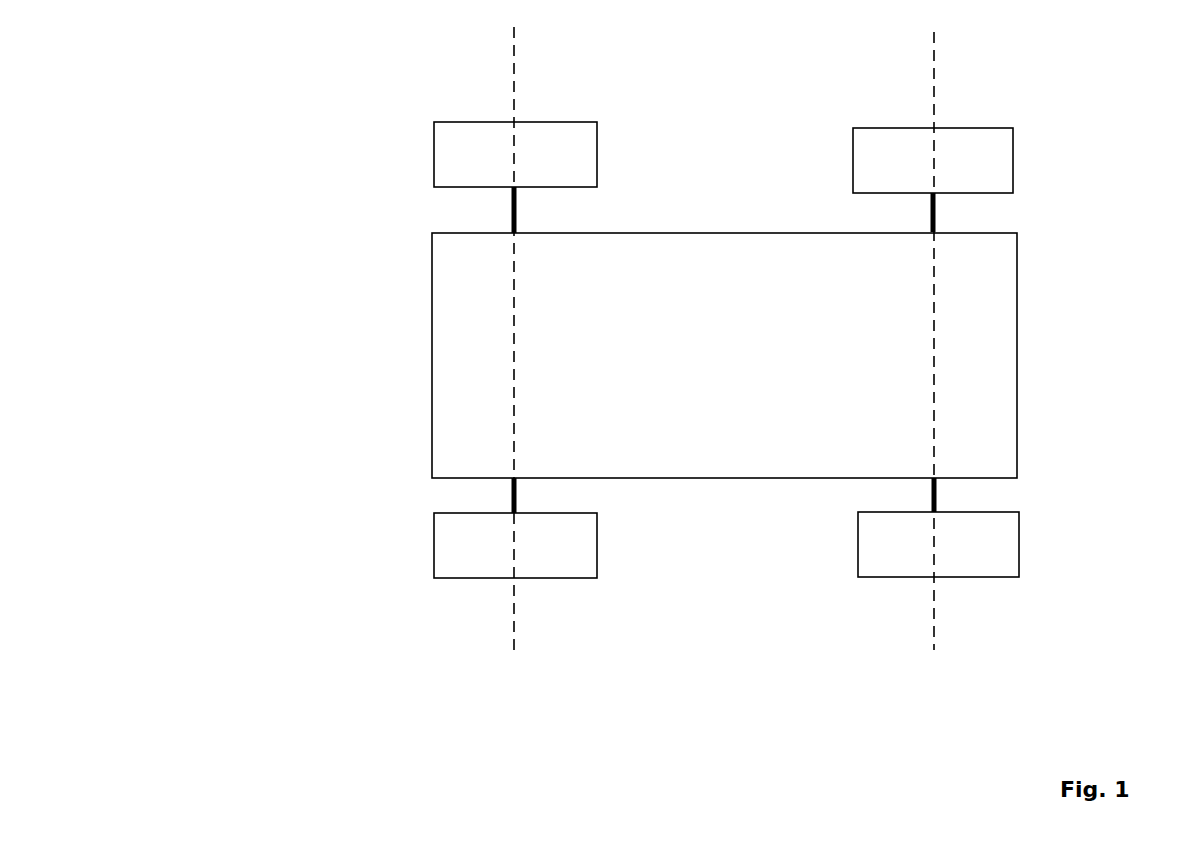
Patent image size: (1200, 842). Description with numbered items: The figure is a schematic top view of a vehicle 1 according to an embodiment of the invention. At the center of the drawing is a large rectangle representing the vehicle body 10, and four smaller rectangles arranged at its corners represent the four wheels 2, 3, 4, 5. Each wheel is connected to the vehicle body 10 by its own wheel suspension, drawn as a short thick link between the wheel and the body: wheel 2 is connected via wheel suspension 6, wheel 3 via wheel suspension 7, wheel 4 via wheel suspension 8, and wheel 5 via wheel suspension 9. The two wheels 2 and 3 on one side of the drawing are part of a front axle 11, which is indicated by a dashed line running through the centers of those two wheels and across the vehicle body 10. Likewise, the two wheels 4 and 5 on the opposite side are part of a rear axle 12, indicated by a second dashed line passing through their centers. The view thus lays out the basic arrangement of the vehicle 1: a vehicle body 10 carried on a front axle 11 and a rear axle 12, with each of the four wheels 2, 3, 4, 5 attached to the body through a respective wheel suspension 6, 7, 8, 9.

The vehicle 1 is at (255, 176).
The wheel 2 is at (467, 567).
The wheel 3 is at (465, 140).
The wheel 4 is at (993, 562).
The wheel 5 is at (1002, 150).
The wheel suspension 6 is at (518, 495).
The wheel suspension 7 is at (518, 212).
The wheel suspension 8 is at (938, 489).
The wheel suspension 9 is at (937, 213).
The vehicle body 10 is at (999, 352).
The front axle 11 is at (515, 610).
The rear axle 12 is at (935, 618).